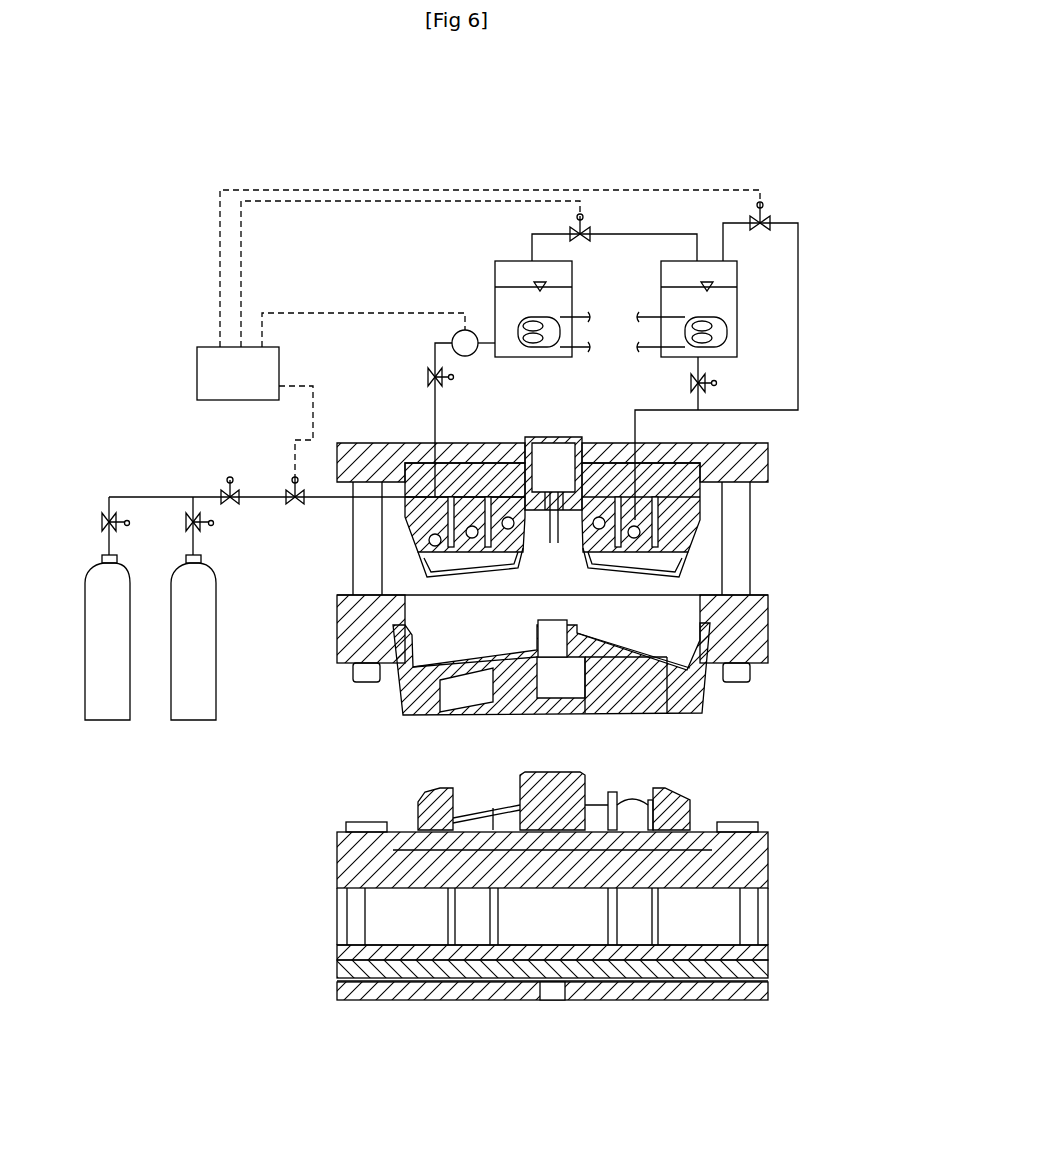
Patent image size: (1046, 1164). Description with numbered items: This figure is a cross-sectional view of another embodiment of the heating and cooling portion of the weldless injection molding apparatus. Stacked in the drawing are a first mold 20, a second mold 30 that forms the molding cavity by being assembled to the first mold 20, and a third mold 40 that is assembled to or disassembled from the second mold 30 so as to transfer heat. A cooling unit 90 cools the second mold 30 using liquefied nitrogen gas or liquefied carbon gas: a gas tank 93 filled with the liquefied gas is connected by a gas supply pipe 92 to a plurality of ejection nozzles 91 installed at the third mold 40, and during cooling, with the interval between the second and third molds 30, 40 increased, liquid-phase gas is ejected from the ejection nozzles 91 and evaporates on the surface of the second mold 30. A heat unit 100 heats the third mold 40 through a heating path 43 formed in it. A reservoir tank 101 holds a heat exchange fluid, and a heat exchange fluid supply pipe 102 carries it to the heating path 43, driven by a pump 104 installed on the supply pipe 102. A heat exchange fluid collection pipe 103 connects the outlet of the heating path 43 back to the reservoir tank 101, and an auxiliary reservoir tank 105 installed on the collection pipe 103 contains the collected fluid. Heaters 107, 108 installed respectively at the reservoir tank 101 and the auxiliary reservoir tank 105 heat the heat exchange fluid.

The heat unit 100 is at (756, 153).
The reservoir tank 101 is at (495, 272).
The heat exchange fluid supply pipe 102 is at (435, 403).
The heat exchange fluid collection pipe 103 is at (798, 368).
The pump 104 is at (455, 335).
The auxiliary reservoir tank 105 is at (737, 310).
The heater 107 is at (540, 350).
The heater 108 is at (693, 325).
The heating path 43 is at (410, 463).
The third mold 40 is at (700, 500).
The ejection nozzles 91 is at (660, 538).
The second mold 30 is at (693, 697).
The first mold 20 is at (653, 832).
The cooling unit 90 is at (99, 476).
The gas supply pipe 92 is at (322, 500).
The gas tank 93 is at (188, 707).